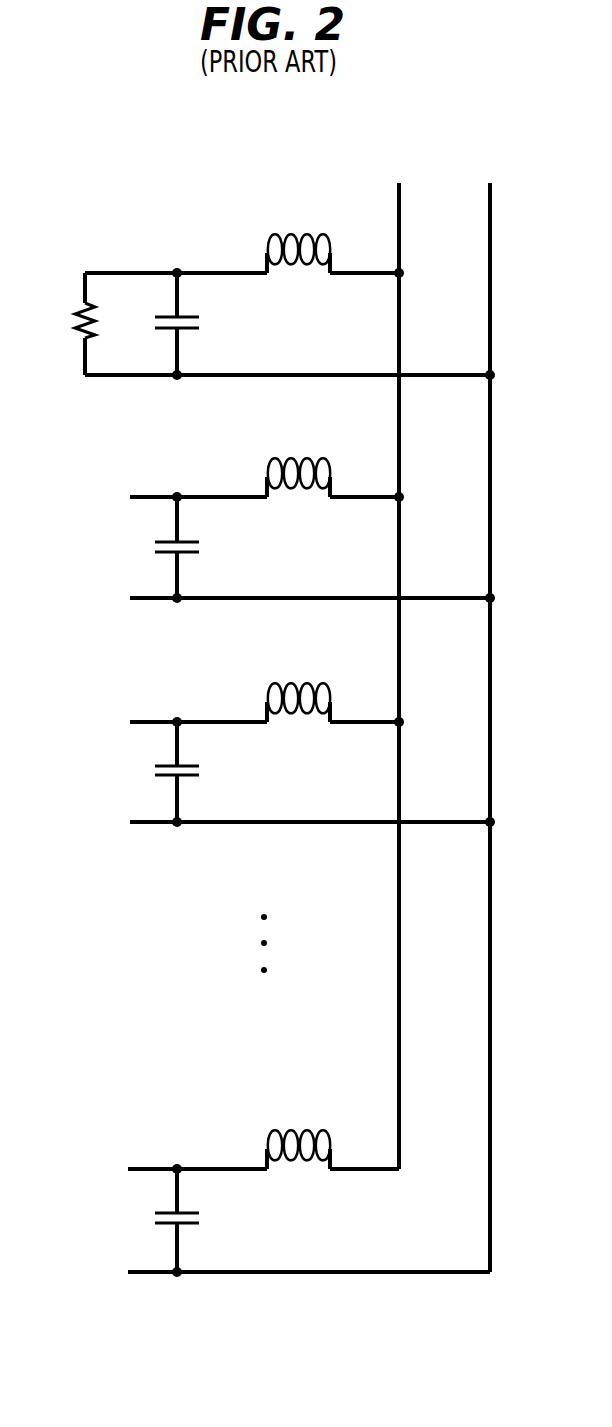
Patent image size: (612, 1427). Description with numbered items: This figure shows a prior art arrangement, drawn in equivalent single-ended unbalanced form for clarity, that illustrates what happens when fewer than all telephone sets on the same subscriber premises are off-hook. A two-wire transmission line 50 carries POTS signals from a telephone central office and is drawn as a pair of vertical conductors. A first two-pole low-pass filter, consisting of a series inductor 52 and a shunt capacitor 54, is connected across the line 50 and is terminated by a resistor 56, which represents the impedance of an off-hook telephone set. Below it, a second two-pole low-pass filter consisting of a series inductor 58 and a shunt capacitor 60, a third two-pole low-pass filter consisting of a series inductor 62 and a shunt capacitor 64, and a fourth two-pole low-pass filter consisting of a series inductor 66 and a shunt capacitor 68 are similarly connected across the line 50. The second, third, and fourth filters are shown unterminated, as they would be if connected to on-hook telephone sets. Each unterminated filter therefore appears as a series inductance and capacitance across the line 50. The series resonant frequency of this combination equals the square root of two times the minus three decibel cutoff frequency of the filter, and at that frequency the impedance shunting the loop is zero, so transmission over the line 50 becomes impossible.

The two-wire transmission line 50 is at (444, 190).
The series inductor 52 is at (282, 233).
The shunt capacitor 54 is at (199, 323).
The resistor 56 is at (78, 305).
The series inductor 58 is at (282, 457).
The shunt capacitor 60 is at (199, 547).
The series inductor 62 is at (282, 682).
The shunt capacitor 64 is at (199, 771).
The series inductor 66 is at (282, 1130).
The shunt capacitor 68 is at (199, 1219).